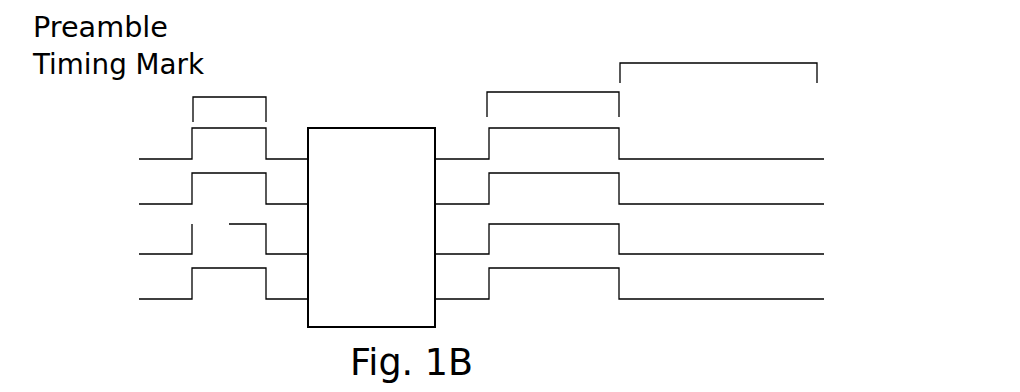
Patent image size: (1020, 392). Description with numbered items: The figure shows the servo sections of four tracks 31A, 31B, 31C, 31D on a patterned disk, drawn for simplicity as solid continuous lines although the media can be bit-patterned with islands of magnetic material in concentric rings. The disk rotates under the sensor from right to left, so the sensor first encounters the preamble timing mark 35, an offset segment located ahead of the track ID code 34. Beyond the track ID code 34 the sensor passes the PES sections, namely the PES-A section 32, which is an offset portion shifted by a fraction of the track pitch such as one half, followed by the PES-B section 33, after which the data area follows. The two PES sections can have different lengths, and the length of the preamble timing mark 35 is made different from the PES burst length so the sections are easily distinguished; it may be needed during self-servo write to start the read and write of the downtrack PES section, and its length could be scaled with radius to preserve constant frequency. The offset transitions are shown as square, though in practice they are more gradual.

The track 31A is at (780, 158).
The track 31B is at (812, 203).
The track 31C is at (807, 253).
The track 31D is at (780, 298).
The PES-A section 32 is at (553, 92).
The PES-B section 33 is at (717, 63).
The track ID code 34 is at (356, 139).
The preamble timing mark 35 is at (229, 97).